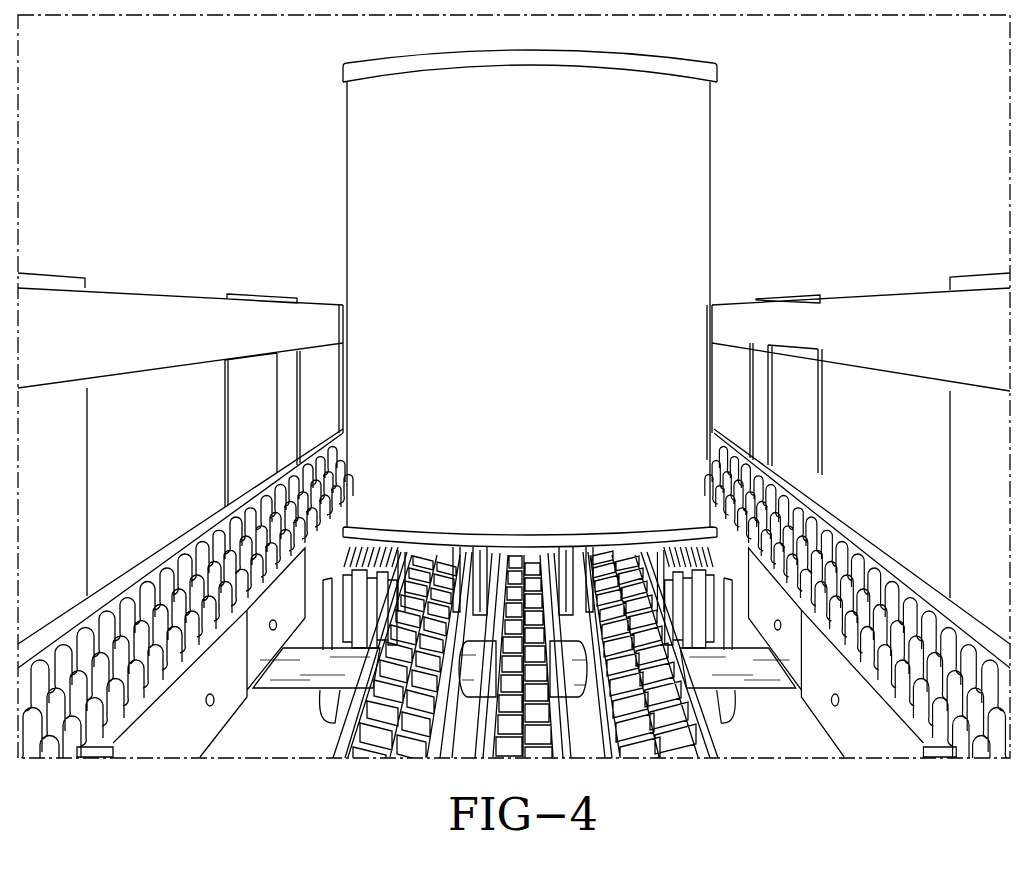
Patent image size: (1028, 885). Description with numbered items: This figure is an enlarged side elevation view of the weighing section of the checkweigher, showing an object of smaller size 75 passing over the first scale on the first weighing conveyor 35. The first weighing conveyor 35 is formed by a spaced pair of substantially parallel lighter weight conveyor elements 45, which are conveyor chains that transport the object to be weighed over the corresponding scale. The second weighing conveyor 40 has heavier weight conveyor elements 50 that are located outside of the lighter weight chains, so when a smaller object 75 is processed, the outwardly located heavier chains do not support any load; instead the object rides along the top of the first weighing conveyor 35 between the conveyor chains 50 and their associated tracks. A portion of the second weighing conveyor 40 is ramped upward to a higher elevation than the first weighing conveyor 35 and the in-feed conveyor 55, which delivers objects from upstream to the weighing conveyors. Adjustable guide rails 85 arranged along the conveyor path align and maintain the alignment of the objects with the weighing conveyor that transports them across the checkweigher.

The first weighing conveyor 35 is at (340, 622).
The second weighing conveyor 40 is at (797, 522).
The conveyor elements 45 is at (700, 535).
The conveyor elements 50 is at (837, 600).
The in-feed conveyor 55 is at (667, 667).
The objects of smaller size 75 is at (642, 192).
The guide rails 85 is at (910, 332).